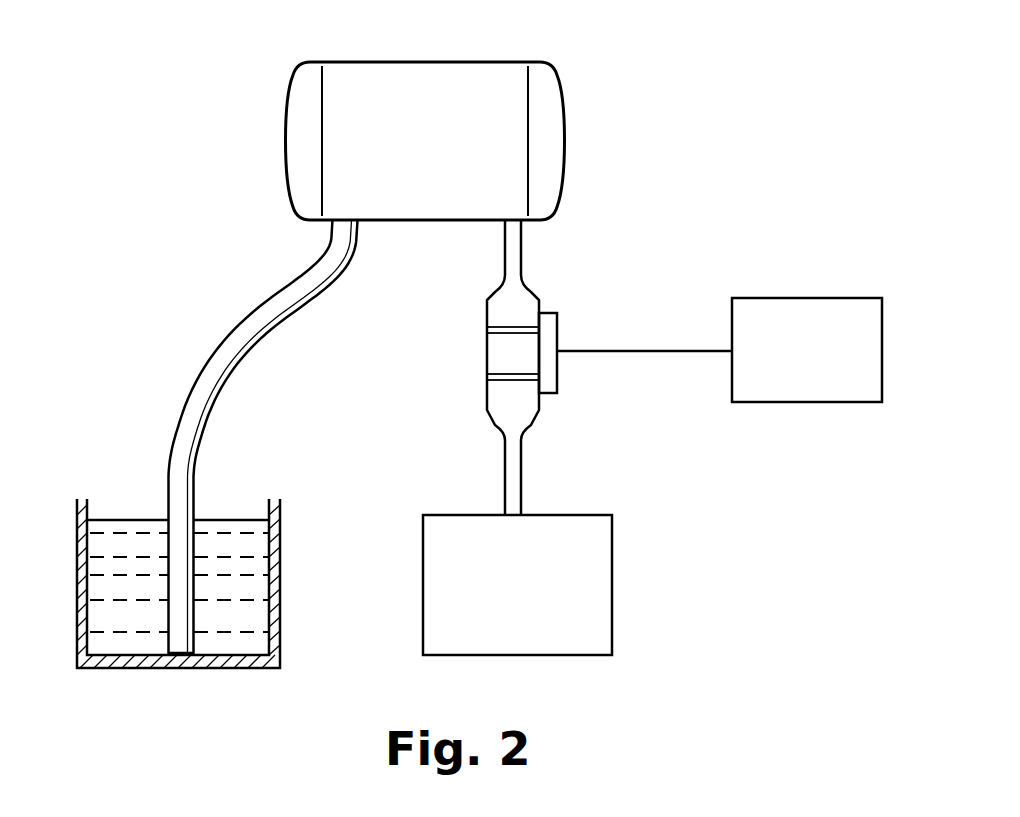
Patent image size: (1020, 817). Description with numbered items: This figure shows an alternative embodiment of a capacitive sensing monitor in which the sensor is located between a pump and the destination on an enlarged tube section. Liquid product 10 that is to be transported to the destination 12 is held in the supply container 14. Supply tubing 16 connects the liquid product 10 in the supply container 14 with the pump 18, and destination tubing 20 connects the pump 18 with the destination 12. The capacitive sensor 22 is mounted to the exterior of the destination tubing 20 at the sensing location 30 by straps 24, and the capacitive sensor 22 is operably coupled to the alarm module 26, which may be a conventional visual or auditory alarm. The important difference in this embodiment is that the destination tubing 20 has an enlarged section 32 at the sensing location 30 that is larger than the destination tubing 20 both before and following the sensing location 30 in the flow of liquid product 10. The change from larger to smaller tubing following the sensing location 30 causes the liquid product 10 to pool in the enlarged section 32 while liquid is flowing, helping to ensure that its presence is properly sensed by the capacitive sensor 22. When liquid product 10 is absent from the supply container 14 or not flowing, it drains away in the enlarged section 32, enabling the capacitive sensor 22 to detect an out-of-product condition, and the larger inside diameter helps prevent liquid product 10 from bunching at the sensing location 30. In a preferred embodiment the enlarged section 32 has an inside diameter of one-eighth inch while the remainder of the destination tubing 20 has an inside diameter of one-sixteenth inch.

The liquid product 10 is at (247, 537).
The destination 12 is at (612, 620).
The supply container 14 is at (82, 574).
The supply tubing 16 is at (210, 362).
The pump 18 is at (441, 60).
The destination tubing 20 is at (521, 481).
The capacitive sensor 22 is at (558, 333).
The straps 24 is at (478, 395).
The alarm module 26 is at (802, 297).
The sensing location 30 is at (484, 362).
The enlarged section 32 is at (581, 357).